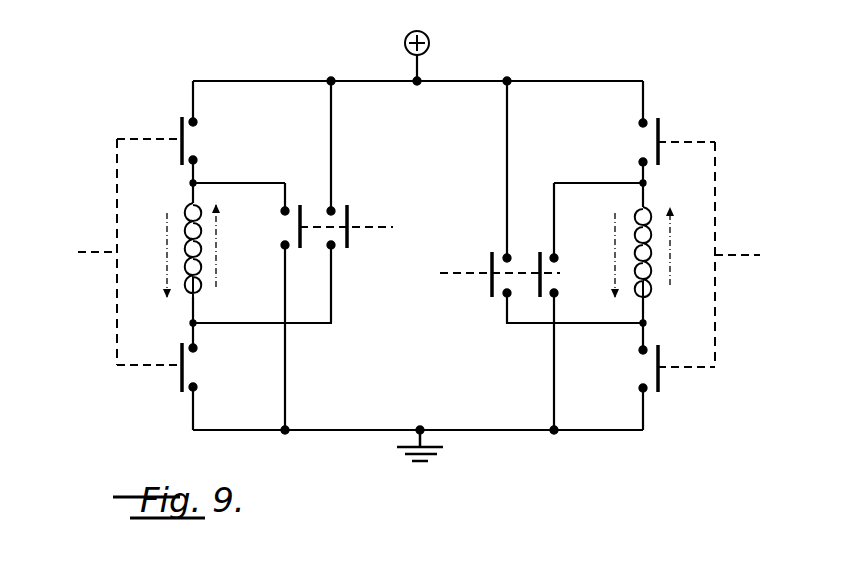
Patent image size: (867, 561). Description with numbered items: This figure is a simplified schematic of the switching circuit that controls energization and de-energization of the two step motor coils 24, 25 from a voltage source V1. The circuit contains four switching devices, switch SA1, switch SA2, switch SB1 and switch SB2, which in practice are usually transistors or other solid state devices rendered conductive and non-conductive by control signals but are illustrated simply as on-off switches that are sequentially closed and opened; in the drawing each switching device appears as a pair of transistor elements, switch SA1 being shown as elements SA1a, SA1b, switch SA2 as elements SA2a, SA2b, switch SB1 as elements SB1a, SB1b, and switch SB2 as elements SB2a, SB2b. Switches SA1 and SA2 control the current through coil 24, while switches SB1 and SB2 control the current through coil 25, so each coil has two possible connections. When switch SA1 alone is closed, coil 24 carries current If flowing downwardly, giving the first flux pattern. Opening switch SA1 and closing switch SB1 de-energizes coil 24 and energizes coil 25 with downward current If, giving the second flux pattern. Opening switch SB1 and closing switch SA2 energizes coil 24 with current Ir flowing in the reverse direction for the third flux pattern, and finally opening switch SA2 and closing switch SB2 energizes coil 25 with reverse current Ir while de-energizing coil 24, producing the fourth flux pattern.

The coil 24 is at (186, 214).
The coil 25 is at (649, 216).
The voltage source V1 is at (404, 48).
The switch SA1 is at (104, 266).
The transistor switch A1a SA1a is at (180, 136).
The transistor switch A1b SA1b is at (180, 380).
The switch SA2 is at (352, 201).
The transistor switch A2a SA2a is at (299, 205).
The transistor switch A2b SA2b is at (348, 240).
The switch SB1 is at (723, 263).
The transistor switch B1a SB1a is at (660, 375).
The transistor switch B1b SB1b is at (660, 131).
The switch SB2 is at (484, 294).
The transistor switch B2a SB2a is at (535, 295).
The transistor switch B2b SB2b is at (492, 258).
The current If is at (148, 255).
The current Ir is at (226, 246).